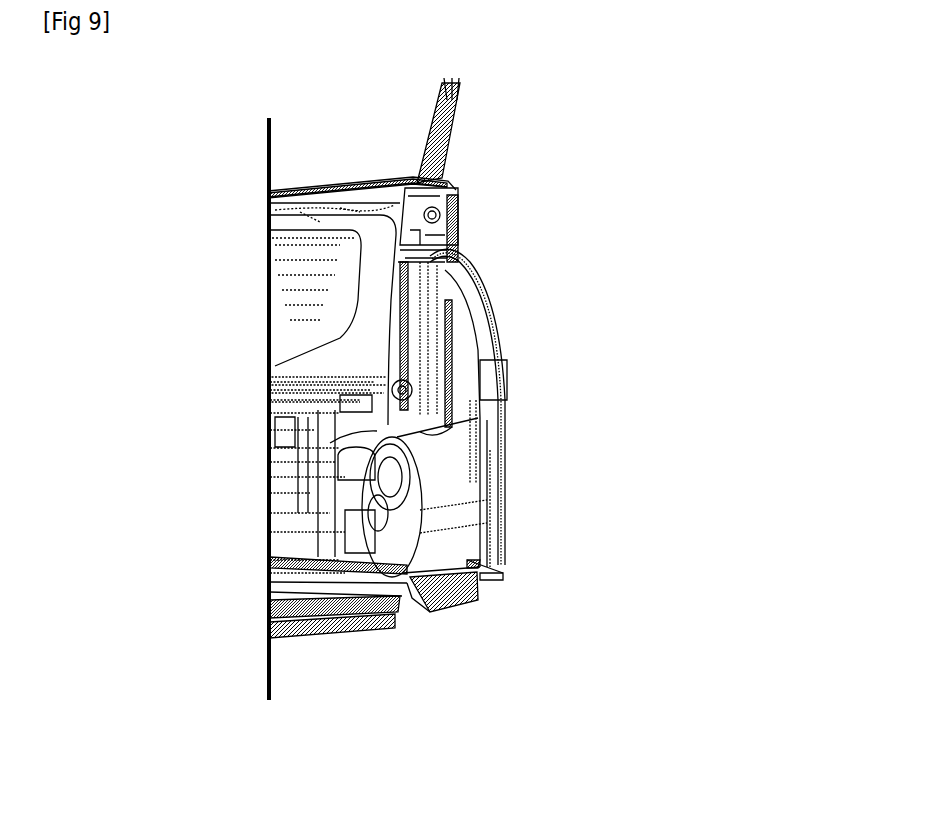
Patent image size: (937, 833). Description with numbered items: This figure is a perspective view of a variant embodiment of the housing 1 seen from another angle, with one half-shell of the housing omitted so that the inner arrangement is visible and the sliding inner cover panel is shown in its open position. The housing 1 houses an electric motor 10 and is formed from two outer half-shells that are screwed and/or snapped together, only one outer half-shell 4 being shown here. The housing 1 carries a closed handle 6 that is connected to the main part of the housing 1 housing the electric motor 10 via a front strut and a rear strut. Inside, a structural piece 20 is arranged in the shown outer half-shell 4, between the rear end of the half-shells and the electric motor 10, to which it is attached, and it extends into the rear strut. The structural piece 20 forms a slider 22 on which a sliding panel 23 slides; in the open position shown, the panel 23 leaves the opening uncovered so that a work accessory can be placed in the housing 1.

The housing 1 is at (611, 546).
The outer half-shell 4 is at (442, 612).
The handle 6 is at (292, 193).
The electric motor 10 is at (276, 510).
The structural piece 20 is at (460, 357).
The slider 22 is at (490, 442).
The sliding panel 23 is at (483, 277).